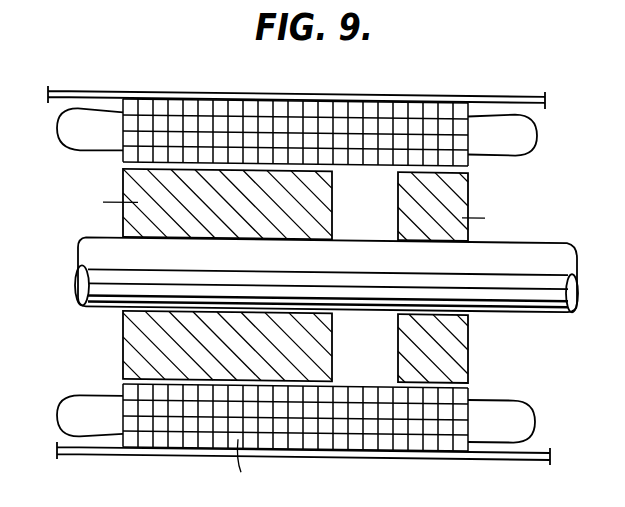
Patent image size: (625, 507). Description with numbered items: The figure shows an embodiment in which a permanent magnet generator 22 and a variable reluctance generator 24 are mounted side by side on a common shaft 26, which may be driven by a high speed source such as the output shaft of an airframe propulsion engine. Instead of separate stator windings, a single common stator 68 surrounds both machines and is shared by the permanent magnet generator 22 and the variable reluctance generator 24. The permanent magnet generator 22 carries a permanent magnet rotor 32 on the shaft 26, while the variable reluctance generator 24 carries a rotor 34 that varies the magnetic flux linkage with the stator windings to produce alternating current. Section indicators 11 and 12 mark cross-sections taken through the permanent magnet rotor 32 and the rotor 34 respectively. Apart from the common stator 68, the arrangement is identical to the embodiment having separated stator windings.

The common stator 68 is at (296, 108).
The permanent magnet rotor 32 is at (315, 194).
The rotor 34 is at (413, 212).
The common shaft 26 is at (566, 261).
The permanent magnet generator 22 is at (98, 343).
The variable reluctance generator 24 is at (496, 346).
The section line 11- 11 is at (168, 187).
The section line 12- 12 is at (433, 189).